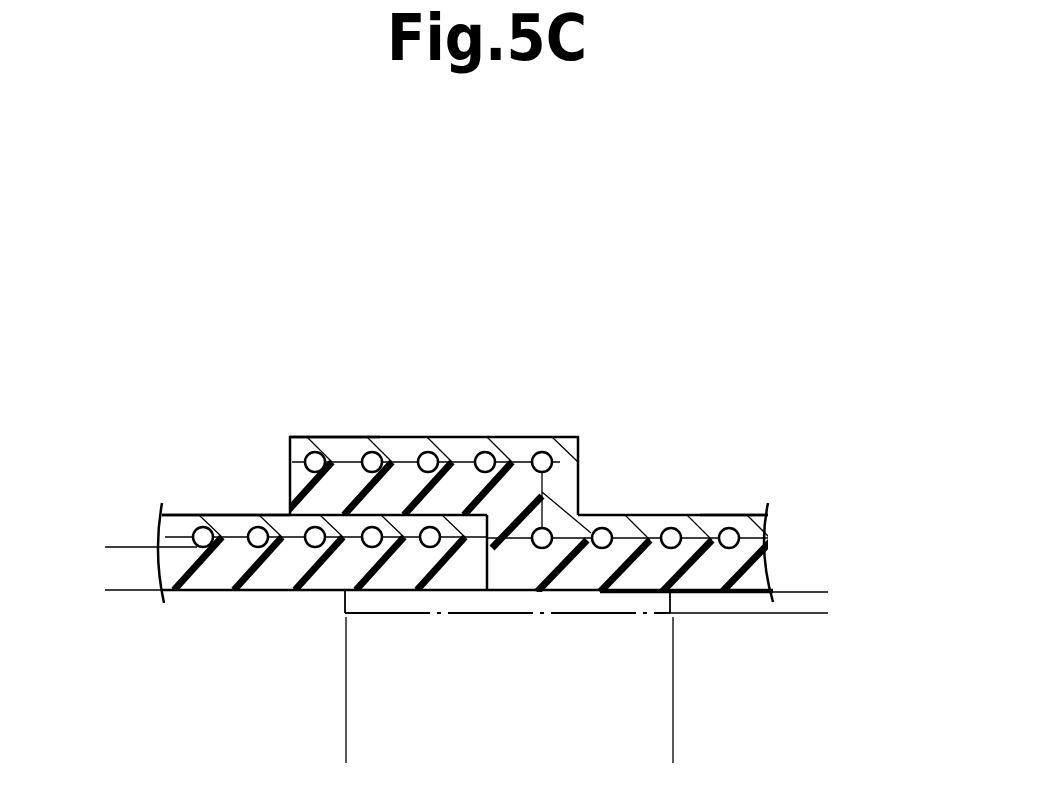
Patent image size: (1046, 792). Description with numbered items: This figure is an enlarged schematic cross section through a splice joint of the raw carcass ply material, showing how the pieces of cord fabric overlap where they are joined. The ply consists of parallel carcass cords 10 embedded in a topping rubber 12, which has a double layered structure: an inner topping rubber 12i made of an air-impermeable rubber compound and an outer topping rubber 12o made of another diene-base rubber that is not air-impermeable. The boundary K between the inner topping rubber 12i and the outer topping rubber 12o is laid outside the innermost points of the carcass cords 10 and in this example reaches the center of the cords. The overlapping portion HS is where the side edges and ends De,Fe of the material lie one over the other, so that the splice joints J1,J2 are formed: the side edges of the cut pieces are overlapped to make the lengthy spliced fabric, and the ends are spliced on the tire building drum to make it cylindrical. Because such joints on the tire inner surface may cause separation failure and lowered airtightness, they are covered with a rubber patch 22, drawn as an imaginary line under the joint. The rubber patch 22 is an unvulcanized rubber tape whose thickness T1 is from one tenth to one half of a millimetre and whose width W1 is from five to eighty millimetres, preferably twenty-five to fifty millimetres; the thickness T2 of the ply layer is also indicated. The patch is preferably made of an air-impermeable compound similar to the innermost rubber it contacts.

The carcass cords 10 is at (730, 528).
The topping rubber 12 is at (883, 460).
The outer topping rubber 12o is at (762, 523).
The inner topping rubber 12i is at (762, 573).
The boundary K is at (760, 525).
The splice joints J1,J2 is at (498, 422).
The heat-shrink/hose member HS is at (277, 590).
The rubber patch 22 is at (483, 615).
The side edges and ends De,Fe is at (335, 437).
The width of the rubber patch W1 is at (673, 754).
The thickness of the rubber patch T1 is at (820, 567).
The thickness T2 is at (112, 547).